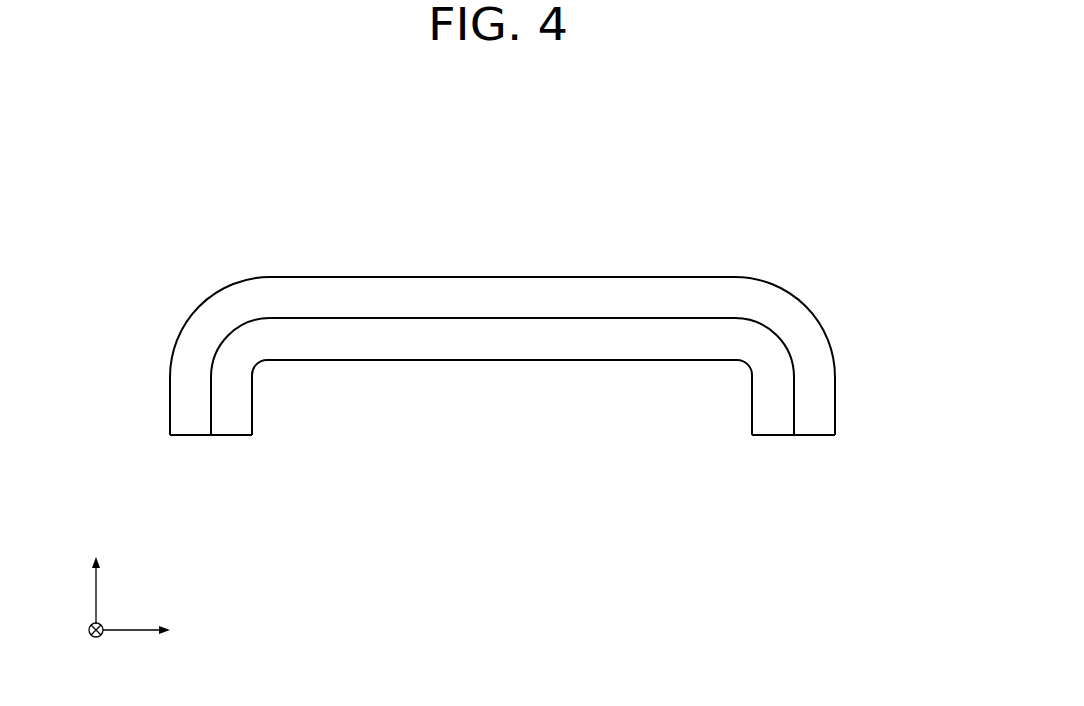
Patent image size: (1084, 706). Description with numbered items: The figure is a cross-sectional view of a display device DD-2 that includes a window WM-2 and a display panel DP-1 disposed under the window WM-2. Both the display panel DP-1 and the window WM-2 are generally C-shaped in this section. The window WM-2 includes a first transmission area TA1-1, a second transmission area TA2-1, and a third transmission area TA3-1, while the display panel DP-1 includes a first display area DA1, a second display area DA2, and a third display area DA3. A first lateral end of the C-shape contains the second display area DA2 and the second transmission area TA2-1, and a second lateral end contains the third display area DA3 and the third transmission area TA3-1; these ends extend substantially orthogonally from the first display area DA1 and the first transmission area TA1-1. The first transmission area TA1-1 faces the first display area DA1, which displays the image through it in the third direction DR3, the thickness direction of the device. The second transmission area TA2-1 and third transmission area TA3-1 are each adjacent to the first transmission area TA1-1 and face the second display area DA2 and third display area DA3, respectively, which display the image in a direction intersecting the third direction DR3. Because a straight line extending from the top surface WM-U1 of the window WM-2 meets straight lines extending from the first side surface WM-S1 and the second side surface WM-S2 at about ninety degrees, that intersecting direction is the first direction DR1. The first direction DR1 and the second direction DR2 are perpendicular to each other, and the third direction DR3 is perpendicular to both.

The display device DD-2 is at (797, 186).
The top surface WM-U1 is at (412, 277).
The first transmission area TA1-1 is at (551, 290).
The second transmission area TA2-1 is at (180, 387).
The third transmission area TA3-1 is at (825, 388).
The first side surface WM-S1 is at (172, 418).
The second side surface WM-S2 is at (835, 419).
The first display area DA1 is at (500, 349).
The second display area DA2 is at (238, 402).
The third display area DA3 is at (760, 411).
The display panel DP-1 is at (232, 437).
The window WM-2 is at (815, 437).
The first direction DR1 is at (156, 630).
The second direction DR2 is at (96, 645).
The third direction DR3 is at (96, 577).